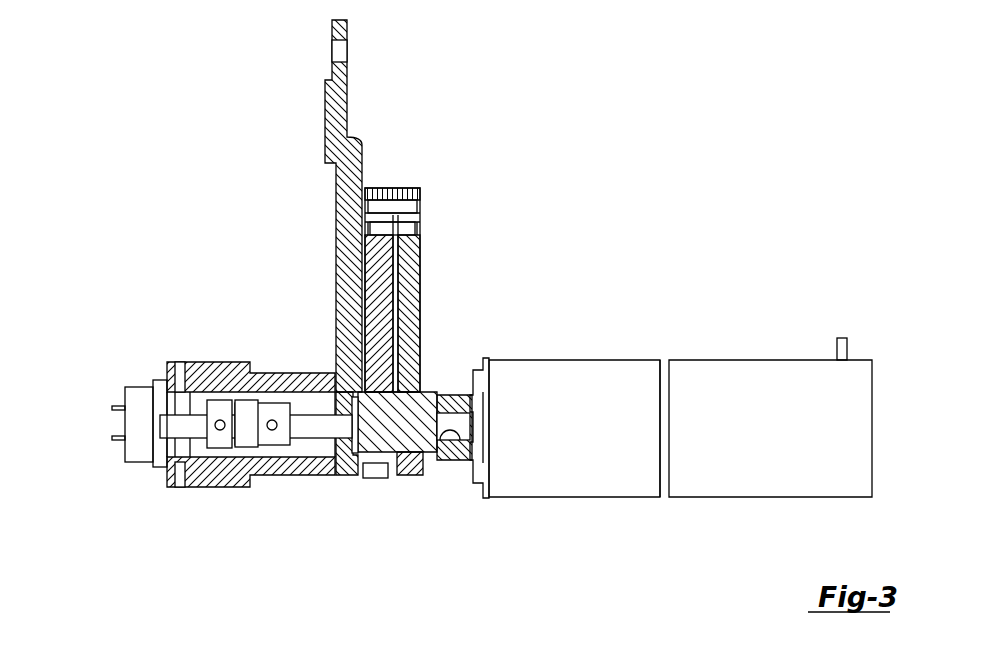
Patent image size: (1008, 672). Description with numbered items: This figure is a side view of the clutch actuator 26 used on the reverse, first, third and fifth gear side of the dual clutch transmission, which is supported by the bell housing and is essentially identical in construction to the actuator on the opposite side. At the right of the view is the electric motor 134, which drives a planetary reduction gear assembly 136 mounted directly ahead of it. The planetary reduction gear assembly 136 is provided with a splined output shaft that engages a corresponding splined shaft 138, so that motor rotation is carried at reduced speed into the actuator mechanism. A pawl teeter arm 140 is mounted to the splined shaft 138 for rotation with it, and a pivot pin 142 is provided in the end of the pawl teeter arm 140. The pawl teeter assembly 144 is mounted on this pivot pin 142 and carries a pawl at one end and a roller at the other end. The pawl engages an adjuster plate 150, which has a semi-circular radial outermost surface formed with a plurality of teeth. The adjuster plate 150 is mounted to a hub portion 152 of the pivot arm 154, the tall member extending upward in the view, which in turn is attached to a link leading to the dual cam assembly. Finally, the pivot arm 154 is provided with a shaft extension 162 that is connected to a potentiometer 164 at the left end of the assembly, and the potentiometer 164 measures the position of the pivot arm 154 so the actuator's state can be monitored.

The clutch actuator 26 is at (671, 345).
The electric motor 134 is at (737, 385).
The planetary reduction gear assembly 136 is at (562, 383).
The splined shaft 138 is at (408, 437).
The pawl teeter arm 140 is at (371, 245).
The pivot pin 142 is at (388, 215).
The pawl teeter assembly 144 is at (382, 190).
The adjuster plate 150 is at (378, 282).
The hub portion 152 is at (353, 475).
The pivot arm 154 is at (338, 128).
The shaft extension 162 is at (290, 422).
The potentiometer 164 is at (135, 395).